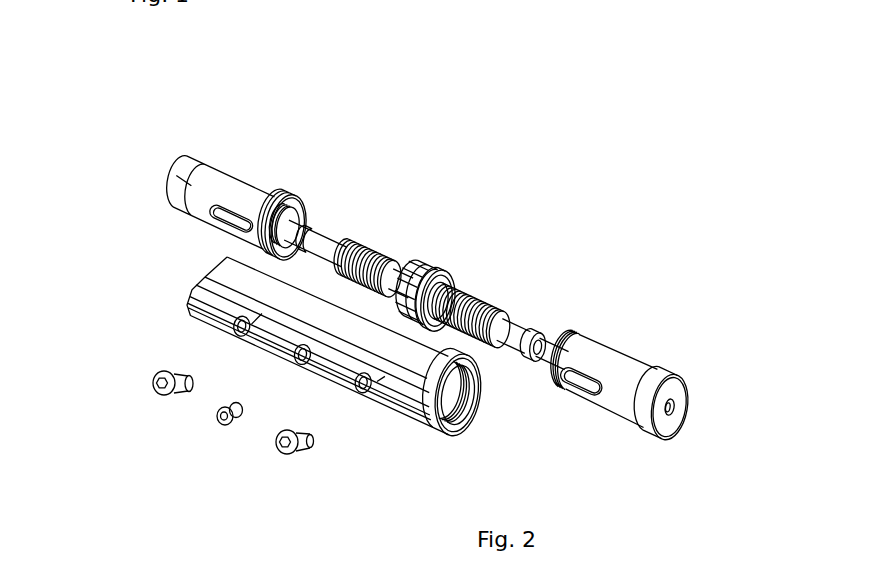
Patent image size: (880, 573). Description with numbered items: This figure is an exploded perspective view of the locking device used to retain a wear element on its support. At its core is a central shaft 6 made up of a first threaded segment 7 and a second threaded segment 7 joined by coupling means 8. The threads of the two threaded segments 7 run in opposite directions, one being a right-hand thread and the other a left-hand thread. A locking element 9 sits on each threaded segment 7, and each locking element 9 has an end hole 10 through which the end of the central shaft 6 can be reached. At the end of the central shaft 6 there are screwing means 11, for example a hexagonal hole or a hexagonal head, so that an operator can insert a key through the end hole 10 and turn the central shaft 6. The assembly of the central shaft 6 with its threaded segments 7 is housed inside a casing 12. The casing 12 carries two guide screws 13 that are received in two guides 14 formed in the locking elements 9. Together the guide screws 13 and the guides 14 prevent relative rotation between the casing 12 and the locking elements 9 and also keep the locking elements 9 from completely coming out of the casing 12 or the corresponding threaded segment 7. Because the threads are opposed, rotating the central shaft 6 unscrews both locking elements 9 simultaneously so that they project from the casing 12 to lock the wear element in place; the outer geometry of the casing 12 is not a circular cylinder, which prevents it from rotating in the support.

The central shaft 6 is at (438, 270).
The threaded segment 7 is at (377, 243).
The coupling means 8 is at (432, 268).
The locking element 9 is at (221, 171).
The end hole 10 is at (667, 433).
The screwing means 11 is at (535, 357).
The casing 12 is at (397, 393).
The guide screw 13 is at (278, 447).
The guide 14 is at (205, 228).